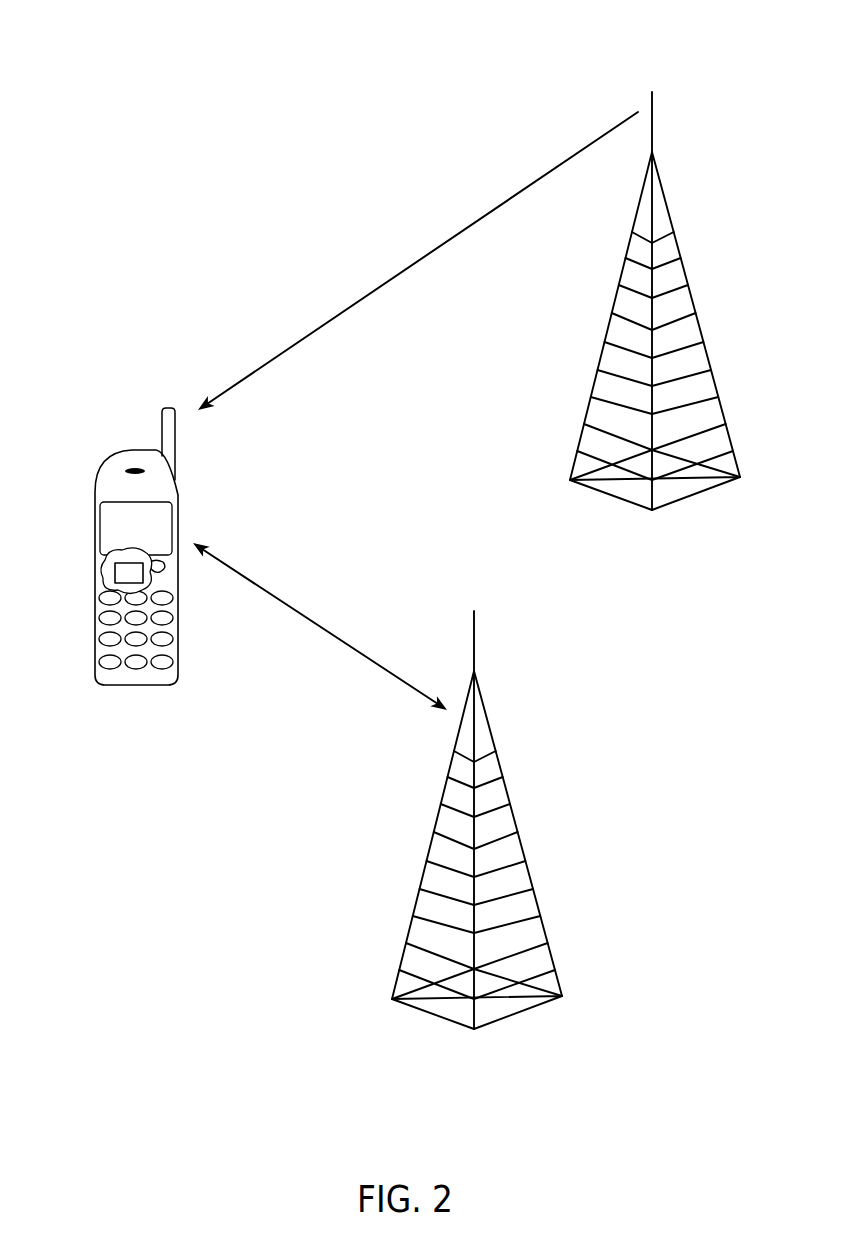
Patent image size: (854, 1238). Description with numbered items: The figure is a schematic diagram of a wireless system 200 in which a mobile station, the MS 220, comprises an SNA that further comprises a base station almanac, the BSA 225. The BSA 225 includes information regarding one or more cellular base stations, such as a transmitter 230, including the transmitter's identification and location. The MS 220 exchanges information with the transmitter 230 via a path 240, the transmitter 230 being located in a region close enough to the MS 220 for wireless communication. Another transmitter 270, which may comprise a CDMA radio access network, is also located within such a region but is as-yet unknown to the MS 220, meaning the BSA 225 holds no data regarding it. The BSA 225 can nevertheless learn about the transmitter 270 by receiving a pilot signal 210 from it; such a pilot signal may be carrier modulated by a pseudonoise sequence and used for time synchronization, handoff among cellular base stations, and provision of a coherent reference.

The wireless system 200 is at (150, 124).
The pilot signal 210 is at (438, 247).
The mobile station 220 is at (112, 576).
The base station almanac 225 is at (120, 573).
The transmitter 230 is at (452, 757).
The path 240 is at (313, 620).
The transmitter 270 is at (603, 345).